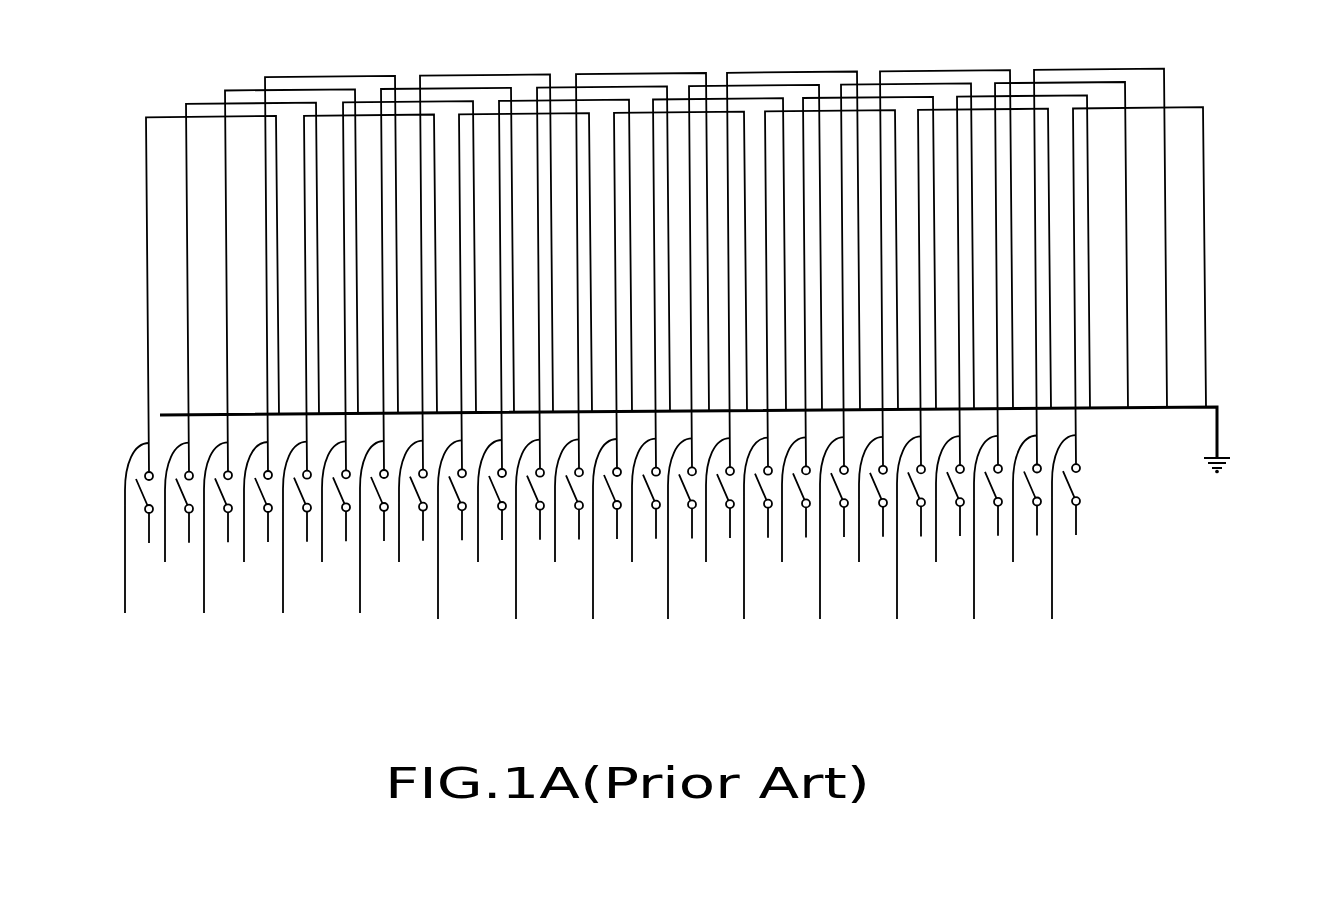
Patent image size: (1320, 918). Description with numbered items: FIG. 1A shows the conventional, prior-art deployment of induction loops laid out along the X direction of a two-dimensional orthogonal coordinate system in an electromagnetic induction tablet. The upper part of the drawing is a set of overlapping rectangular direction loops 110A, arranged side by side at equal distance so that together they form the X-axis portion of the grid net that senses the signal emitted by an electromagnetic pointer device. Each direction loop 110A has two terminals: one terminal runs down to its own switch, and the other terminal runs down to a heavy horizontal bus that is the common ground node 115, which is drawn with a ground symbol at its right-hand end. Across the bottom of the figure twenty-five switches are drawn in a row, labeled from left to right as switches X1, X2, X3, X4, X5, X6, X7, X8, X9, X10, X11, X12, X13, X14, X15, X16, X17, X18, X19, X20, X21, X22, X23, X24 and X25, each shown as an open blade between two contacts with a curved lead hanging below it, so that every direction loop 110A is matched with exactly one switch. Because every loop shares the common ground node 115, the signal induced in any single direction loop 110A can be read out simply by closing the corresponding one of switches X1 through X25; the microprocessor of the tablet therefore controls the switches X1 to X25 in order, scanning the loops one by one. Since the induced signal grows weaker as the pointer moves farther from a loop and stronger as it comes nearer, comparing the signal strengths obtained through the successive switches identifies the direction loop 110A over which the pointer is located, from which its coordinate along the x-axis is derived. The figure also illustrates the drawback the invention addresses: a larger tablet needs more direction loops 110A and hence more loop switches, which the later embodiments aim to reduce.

The direction loop 110A is at (337, 76).
The common ground node 115 is at (1220, 414).
The switch X1 is at (130, 550).
The switch X2 is at (170, 524).
The switch X3 is at (209, 550).
The switch X4 is at (249, 523).
The switch X5 is at (288, 550).
The switch X6 is at (327, 523).
The switch X7 is at (365, 549).
The switch X8 is at (404, 523).
The switch X9 is at (443, 549).
The switch X10 is at (483, 522).
The switch X11 is at (521, 552).
The switch X12 is at (560, 522).
The switch X13 is at (598, 551).
The switch X14 is at (637, 522).
The switch X15 is at (673, 551).
The switch X16 is at (711, 521).
The switch X17 is at (749, 551).
The switch X18 is at (787, 521).
The switch X19 is at (825, 550).
The switch X20 is at (864, 521).
The switch X21 is at (902, 550).
The switch X22 is at (941, 520).
The switch X23 is at (979, 550).
The switch X24 is at (1018, 521).
The switch X25 is at (1057, 549).